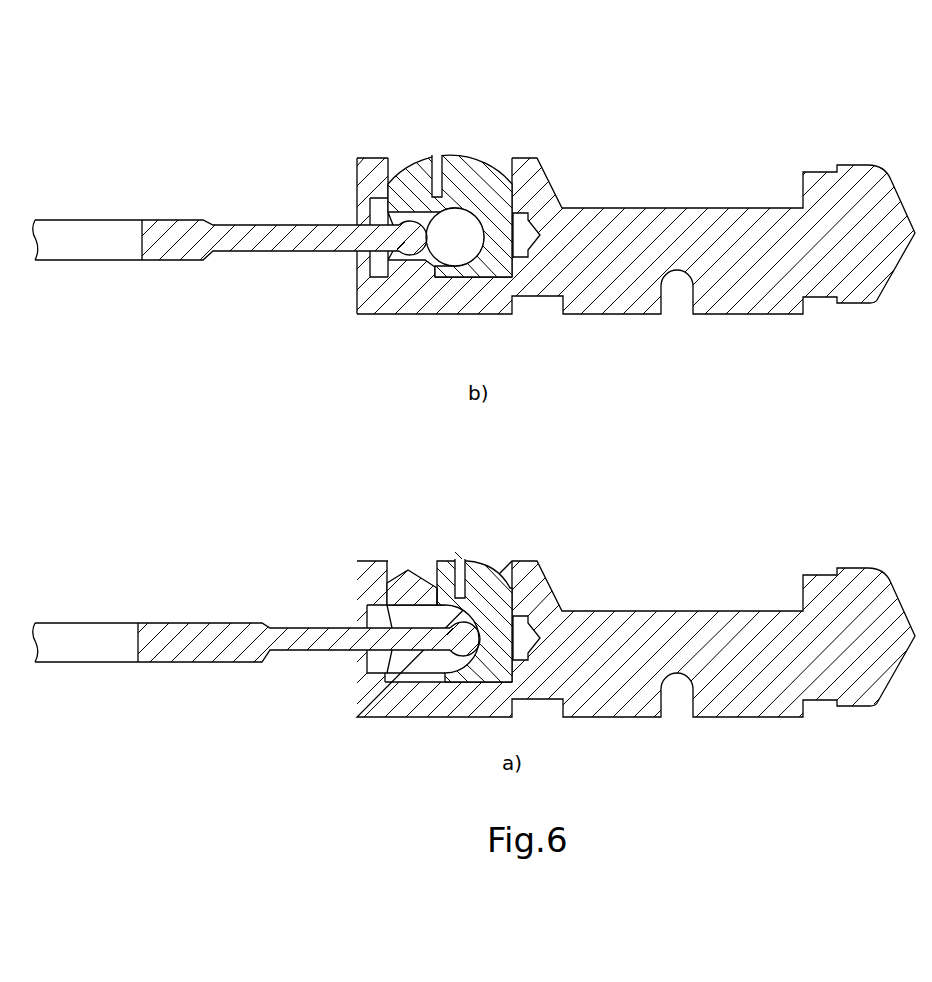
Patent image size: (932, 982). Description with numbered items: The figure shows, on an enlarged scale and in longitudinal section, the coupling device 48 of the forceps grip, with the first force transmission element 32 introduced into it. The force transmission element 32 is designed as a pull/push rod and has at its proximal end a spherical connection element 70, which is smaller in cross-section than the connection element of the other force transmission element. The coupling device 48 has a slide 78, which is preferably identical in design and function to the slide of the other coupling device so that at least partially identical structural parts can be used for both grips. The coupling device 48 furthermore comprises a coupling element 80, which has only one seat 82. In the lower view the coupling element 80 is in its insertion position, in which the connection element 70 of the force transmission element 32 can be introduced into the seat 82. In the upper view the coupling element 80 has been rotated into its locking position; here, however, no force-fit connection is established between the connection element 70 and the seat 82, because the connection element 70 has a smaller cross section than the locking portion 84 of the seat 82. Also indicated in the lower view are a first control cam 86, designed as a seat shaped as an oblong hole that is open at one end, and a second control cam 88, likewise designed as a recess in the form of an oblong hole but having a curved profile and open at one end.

The first force transmission element 32 is at (238, 225).
The coupling device 48 is at (474, 408).
The connection element 70 is at (404, 227).
The slide 78 is at (613, 223).
The coupling element 80 is at (468, 172).
The seat 82 is at (455, 223).
The locking portion 84 is at (358, 313).
The first control cam 86 is at (435, 608).
The second control cam 88 is at (465, 559).